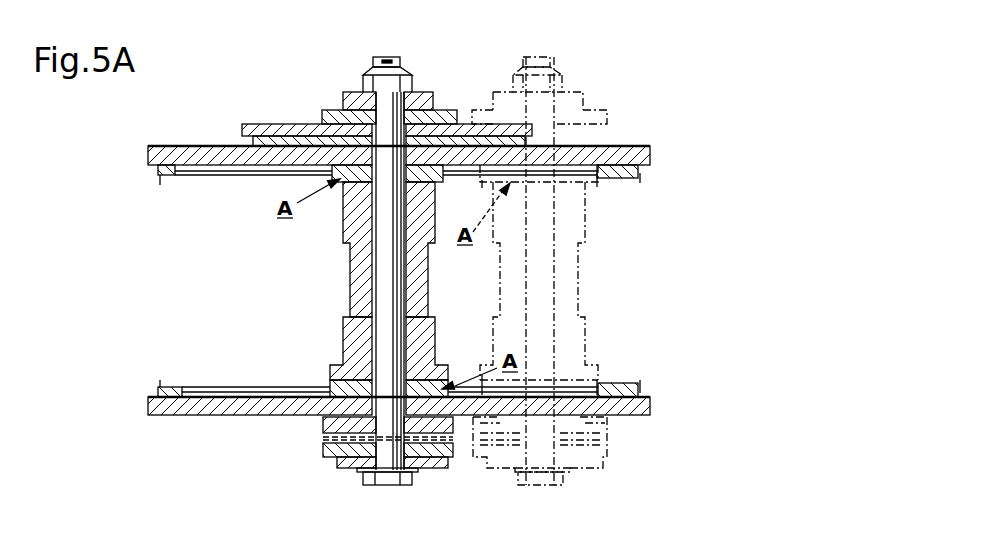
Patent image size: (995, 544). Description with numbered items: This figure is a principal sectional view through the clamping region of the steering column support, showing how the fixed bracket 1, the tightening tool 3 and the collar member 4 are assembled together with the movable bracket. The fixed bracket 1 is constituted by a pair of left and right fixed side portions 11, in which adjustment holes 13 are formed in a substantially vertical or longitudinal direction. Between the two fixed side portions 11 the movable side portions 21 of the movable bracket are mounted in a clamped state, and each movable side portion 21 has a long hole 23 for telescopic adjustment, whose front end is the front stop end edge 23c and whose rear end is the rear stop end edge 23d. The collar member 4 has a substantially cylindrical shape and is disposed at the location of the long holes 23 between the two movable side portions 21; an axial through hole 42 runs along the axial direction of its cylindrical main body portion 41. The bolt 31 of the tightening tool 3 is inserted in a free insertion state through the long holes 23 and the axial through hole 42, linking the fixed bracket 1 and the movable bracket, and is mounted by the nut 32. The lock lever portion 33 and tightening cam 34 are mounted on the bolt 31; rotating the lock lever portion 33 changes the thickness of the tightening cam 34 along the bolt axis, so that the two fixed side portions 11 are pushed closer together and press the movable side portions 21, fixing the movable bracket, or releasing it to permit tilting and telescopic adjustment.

The fixed bracket 1 is at (240, 432).
The tightening tool 3 is at (370, 53).
The collar member 4 is at (340, 286).
The fixed side portion 11 is at (218, 146).
The adjustment hole 13 is at (396, 163).
The movable side portion 21 is at (612, 180).
The long hole for telescopic adjustment 23 is at (270, 173).
The front stop end edge 23c is at (190, 174).
The rear stop end edge 23d is at (572, 182).
The bolt 31 is at (400, 267).
The nut 32 is at (363, 78).
The lock lever portion 33 is at (341, 470).
The tightening cam 34 is at (322, 427).
The cylindrical main body portion 41 is at (350, 262).
The axial through hole 42 is at (372, 330).